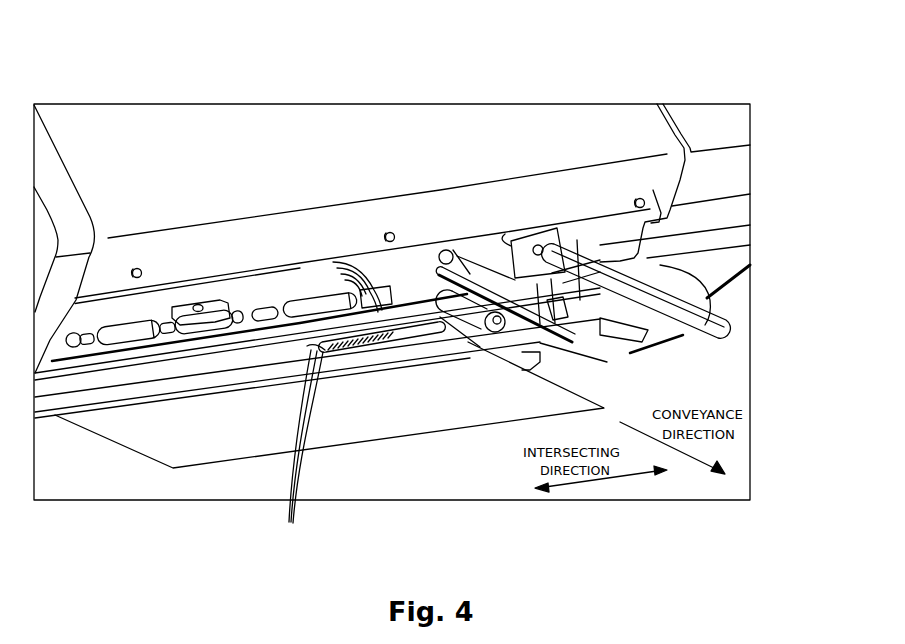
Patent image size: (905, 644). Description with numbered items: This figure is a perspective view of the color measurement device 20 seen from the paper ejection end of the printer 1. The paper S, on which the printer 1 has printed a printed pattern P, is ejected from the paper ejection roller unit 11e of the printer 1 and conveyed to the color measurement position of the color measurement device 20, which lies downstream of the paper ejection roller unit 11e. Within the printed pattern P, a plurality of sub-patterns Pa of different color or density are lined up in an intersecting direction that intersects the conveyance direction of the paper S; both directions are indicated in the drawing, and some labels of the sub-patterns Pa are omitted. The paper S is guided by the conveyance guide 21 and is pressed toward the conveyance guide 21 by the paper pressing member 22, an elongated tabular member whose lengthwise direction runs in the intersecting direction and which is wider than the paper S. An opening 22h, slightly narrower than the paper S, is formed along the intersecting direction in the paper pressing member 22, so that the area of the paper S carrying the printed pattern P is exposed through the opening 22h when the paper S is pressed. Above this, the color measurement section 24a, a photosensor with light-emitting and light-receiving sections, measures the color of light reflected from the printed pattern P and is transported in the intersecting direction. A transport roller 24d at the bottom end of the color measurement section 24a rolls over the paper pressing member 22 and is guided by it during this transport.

The printer 1 is at (730, 224).
The paper ejection roller unit 11e is at (306, 292).
The color measurement device 20 is at (368, 117).
The conveyance guide 21 is at (530, 355).
The paper pressing member 22 is at (118, 390).
The opening 22h is at (229, 362).
The color measurement section 24a is at (727, 312).
The transport roller 24d is at (492, 320).
The printed pattern P is at (403, 321).
The sub-patterns Pa is at (299, 448).
The paper S is at (194, 452).